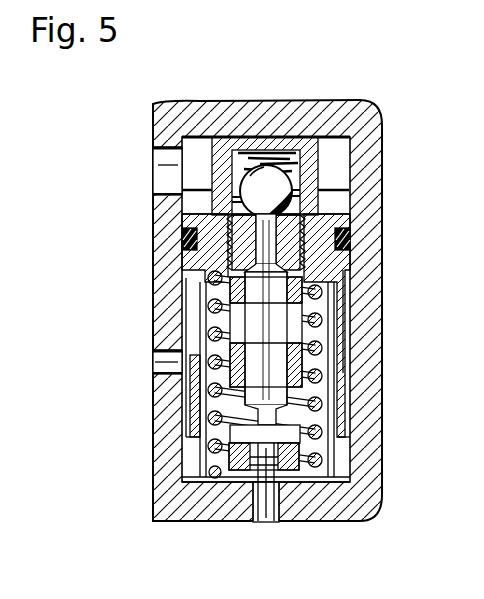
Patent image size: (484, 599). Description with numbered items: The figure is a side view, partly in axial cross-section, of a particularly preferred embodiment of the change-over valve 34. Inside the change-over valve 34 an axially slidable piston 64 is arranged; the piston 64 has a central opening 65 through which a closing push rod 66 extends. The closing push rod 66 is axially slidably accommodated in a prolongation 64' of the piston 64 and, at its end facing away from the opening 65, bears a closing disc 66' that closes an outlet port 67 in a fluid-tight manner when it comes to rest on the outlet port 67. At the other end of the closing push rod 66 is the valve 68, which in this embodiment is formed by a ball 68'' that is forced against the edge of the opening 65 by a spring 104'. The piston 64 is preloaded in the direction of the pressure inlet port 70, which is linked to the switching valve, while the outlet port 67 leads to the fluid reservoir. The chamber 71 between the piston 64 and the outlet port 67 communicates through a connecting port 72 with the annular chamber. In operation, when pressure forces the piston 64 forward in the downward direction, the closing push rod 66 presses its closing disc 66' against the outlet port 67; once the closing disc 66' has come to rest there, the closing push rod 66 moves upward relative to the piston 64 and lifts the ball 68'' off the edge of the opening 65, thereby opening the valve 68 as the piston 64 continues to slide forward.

The change-over valve 34 is at (393, 118).
The valve 68 is at (262, 166).
The spring 104' is at (260, 117).
The ball 68'' is at (348, 184).
The pressure inlet port 70 is at (198, 190).
The piston 64 is at (218, 233).
The opening 65 is at (285, 227).
The chamber 71 is at (220, 323).
The closing push rod 66 is at (336, 319).
The connecting port 72 is at (157, 367).
The prolongation 64' is at (316, 353).
The closing disc 66' is at (253, 499).
The outlet port 67 is at (268, 512).